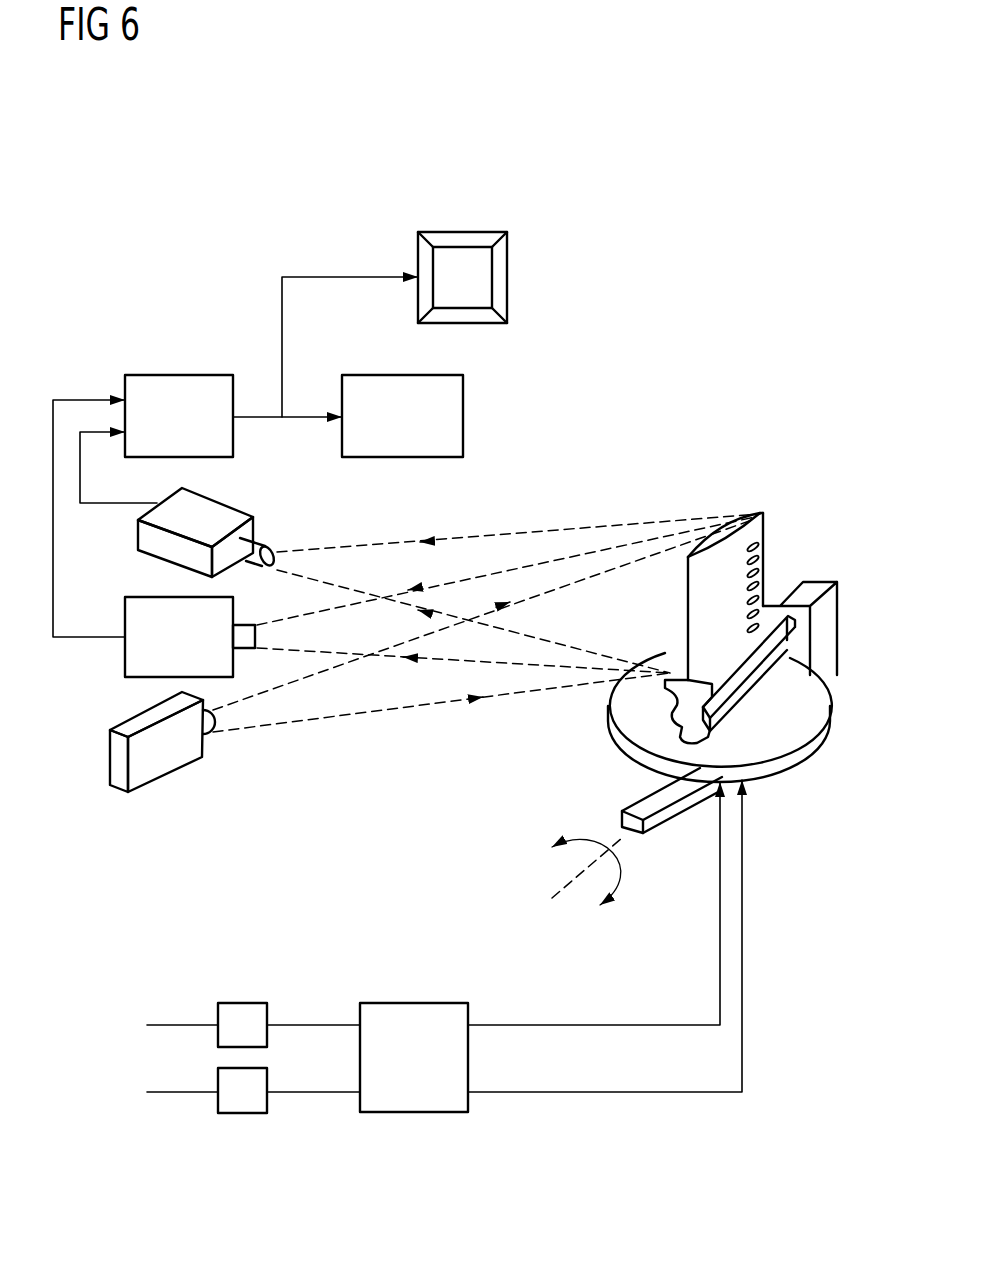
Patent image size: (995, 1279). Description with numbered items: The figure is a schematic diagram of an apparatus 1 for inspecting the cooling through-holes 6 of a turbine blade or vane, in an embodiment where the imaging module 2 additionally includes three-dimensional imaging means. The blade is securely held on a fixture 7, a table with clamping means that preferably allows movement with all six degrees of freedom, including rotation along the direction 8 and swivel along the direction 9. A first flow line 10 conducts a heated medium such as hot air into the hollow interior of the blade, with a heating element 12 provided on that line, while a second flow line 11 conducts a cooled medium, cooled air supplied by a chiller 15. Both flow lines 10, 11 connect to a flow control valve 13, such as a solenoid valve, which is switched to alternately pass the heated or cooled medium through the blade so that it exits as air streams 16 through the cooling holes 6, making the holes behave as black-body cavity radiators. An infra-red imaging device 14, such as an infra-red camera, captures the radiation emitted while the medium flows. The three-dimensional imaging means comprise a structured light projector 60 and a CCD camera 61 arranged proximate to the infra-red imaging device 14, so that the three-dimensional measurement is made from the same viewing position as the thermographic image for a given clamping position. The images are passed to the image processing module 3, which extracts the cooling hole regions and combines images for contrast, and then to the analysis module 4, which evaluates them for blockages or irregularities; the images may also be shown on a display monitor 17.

The apparatus 1 is at (263, 147).
The imaging module 2 is at (162, 865).
The image processing module 3 is at (187, 429).
The analysis module 4 is at (410, 429).
The through-holes 6 is at (746, 586).
The fixture 7 is at (820, 695).
The rotation direction 8 is at (777, 477).
The swivel direction 9 is at (580, 838).
The first flow line 10 is at (549, 1023).
The second flow line 11 is at (539, 1133).
The heating element 12 is at (256, 1038).
The flow control valve 13 is at (428, 1071).
The infra-red imaging device 14 is at (193, 650).
The chiller 15 is at (256, 1104).
The air streams 16 is at (763, 610).
The display monitor 17 is at (507, 282).
The structured light projector 60 is at (183, 763).
The CCD camera 61 is at (245, 503).